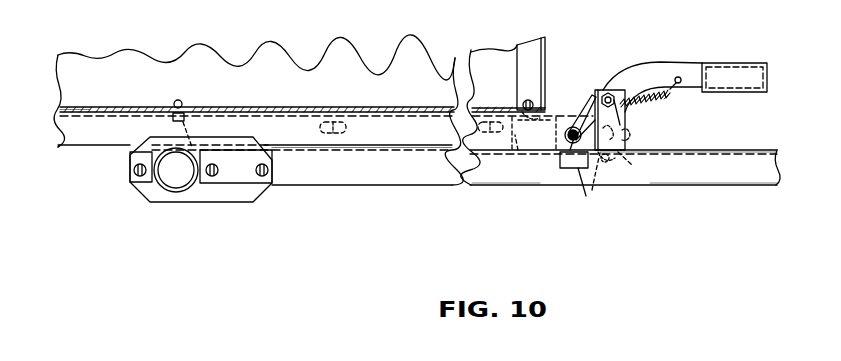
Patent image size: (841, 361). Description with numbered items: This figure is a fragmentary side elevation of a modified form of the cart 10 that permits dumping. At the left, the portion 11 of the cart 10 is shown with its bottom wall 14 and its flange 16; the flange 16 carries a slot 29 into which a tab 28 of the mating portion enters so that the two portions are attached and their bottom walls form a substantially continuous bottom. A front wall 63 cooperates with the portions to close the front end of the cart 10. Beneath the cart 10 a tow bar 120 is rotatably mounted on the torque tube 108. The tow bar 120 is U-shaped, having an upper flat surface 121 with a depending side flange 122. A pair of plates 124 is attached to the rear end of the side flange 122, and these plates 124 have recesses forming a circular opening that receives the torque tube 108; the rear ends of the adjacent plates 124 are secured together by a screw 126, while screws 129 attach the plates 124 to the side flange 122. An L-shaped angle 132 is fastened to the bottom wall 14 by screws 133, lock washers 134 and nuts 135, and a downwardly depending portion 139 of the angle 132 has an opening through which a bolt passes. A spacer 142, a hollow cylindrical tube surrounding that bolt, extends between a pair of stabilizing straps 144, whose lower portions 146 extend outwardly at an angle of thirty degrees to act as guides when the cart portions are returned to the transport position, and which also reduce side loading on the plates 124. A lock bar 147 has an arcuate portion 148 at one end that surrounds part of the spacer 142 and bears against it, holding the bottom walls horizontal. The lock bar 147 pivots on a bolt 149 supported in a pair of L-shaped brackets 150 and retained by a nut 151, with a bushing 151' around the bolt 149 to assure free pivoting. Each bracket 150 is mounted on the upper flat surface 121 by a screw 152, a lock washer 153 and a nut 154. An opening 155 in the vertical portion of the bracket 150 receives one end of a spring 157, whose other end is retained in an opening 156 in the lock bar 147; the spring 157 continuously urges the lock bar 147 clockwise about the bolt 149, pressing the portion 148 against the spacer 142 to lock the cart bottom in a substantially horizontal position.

The cart 10 is at (393, 1).
The portion 11 is at (86, 113).
The bottom wall 14 is at (421, 107).
The flange 16 is at (60, 147).
The tab 28 is at (348, 128).
The slot 29 is at (318, 128).
The front wall 63 is at (552, 51).
The torque tube 108 is at (173, 191).
The tow bar 120 is at (770, 148).
The upper flat surface 121 is at (717, 150).
The side flange 122 is at (741, 174).
The plate 124 is at (150, 127).
The screw 126 is at (138, 192).
The screw 129 is at (225, 176).
The L-shaped angle 132 is at (353, 151).
The screw 133 is at (181, 106).
The lock washer 134 is at (506, 158).
The nut 135 is at (534, 133).
The downwardly depending portion 139 is at (518, 150).
The spacer 142 is at (567, 130).
The stabilizing strap 144 is at (554, 166).
The lower portion 146 is at (586, 196).
The lock bar 147 is at (679, 56).
The arcuate portion 148 is at (571, 140).
The bolt 149 is at (594, 100).
The L-shaped bracket 150 is at (627, 128).
The nut 151 is at (572, 99).
The bushing 151' is at (606, 89).
The screw 152 is at (626, 141).
The lock washer 153 is at (628, 158).
The nut 154 is at (594, 162).
The opening 155 is at (603, 200).
The opening 156 is at (681, 78).
The spring 157 is at (670, 94).